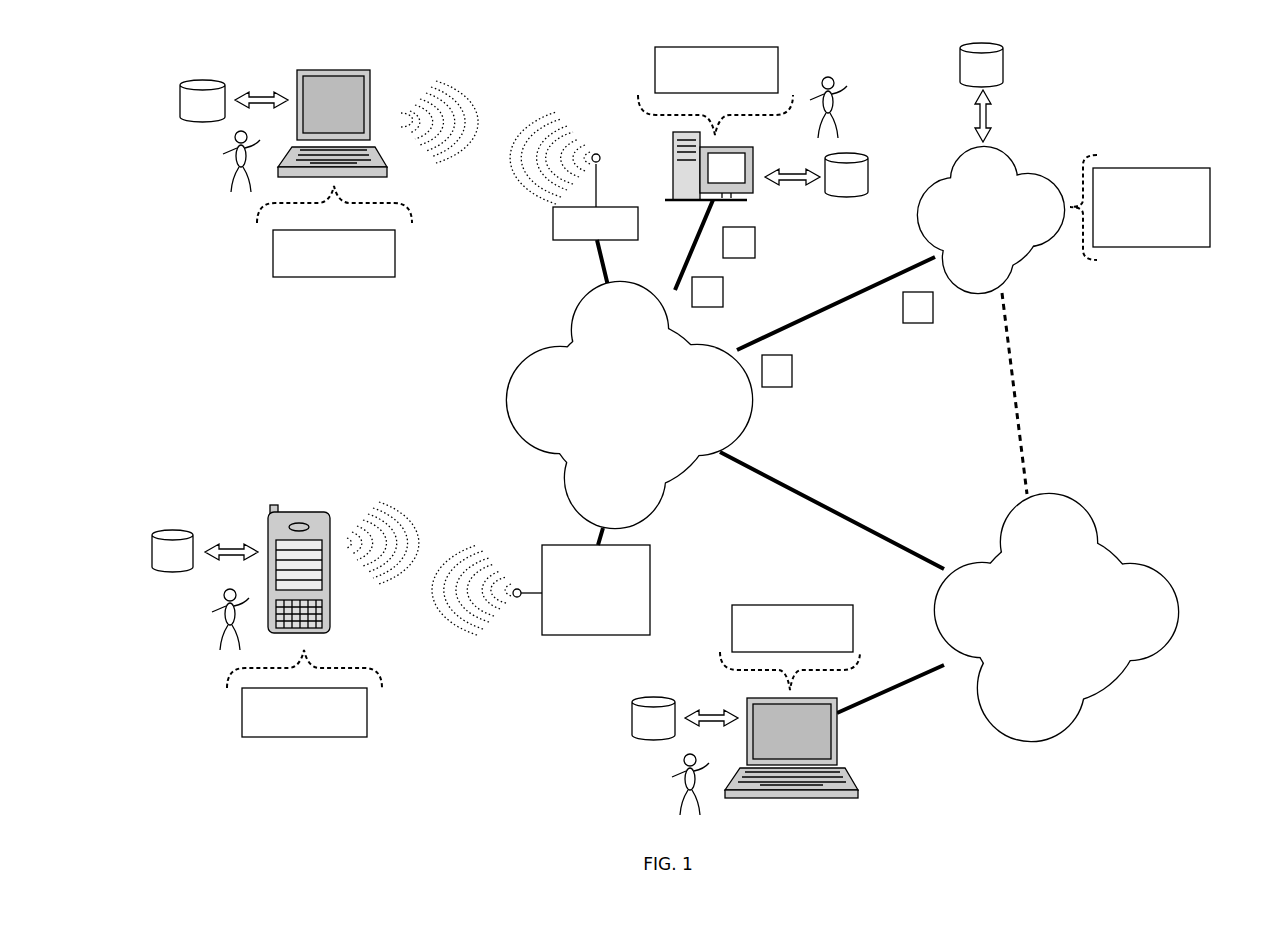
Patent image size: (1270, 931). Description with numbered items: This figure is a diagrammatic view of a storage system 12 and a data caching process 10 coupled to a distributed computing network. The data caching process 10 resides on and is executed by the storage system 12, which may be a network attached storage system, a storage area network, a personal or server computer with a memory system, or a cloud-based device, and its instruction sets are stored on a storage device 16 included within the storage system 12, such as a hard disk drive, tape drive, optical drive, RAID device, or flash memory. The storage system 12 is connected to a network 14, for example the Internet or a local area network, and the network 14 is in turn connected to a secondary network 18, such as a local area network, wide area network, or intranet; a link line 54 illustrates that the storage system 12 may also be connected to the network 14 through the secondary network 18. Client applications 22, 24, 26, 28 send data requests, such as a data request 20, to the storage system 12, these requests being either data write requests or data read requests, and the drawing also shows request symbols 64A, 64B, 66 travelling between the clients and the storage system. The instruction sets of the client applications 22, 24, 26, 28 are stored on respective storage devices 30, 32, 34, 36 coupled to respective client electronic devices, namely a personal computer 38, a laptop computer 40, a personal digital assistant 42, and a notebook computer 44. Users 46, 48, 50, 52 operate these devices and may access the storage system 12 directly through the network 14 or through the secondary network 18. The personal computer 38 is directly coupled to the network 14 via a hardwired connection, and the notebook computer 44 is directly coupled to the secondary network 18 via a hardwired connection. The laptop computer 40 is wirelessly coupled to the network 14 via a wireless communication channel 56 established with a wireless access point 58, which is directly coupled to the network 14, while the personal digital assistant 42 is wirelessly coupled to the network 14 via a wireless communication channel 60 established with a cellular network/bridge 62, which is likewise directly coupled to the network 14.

The data caching process 10 is at (1210, 200).
The storage system 12 is at (991, 220).
The network 14 is at (629, 405).
The storage device 16 is at (981, 92).
The secondary network 18 is at (1056, 617).
The data request 20 is at (933, 306).
The client application 22 is at (778, 74).
The client application 24 is at (395, 248).
The client application 26 is at (367, 706).
The client application 28 is at (853, 628).
The storage device 30 is at (816, 175).
The storage device 32 is at (234, 101).
The storage device 34 is at (205, 551).
The storage device 36 is at (685, 718).
The personal computer 38 is at (753, 160).
The laptop computer 40 is at (365, 92).
The personal digital assistant 42 is at (330, 580).
The notebook computer 44 is at (840, 742).
The user 46 is at (845, 92).
The user 48 is at (205, 160).
The user 50 is at (210, 602).
The user 52 is at (660, 780).
The link line 54 is at (1008, 388).
The wireless communication channel 56 is at (505, 108).
The wireless access point 58 is at (553, 226).
The wireless communication channel 60 is at (437, 540).
The cellular network/bridge 62 is at (650, 560).
The data write request 64A is at (723, 292).
The data write request 64B is at (755, 243).
The data read request 66 is at (792, 370).